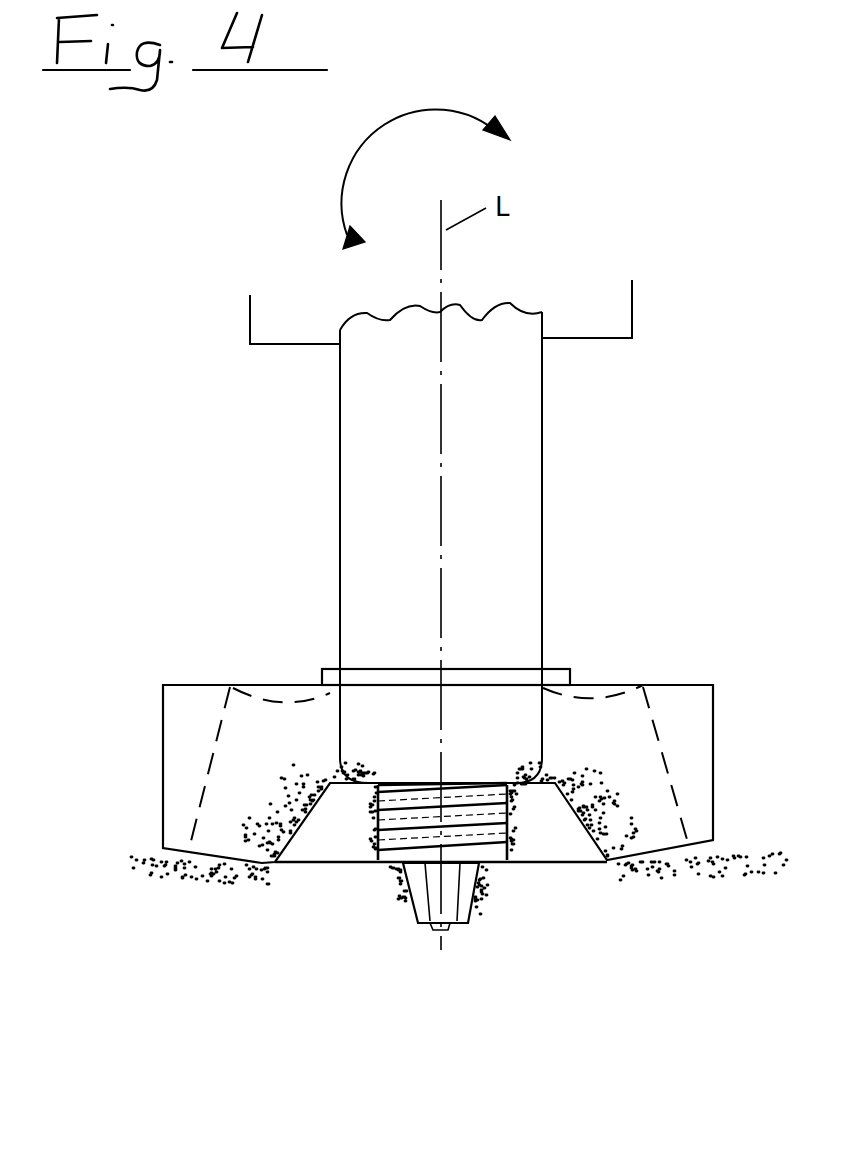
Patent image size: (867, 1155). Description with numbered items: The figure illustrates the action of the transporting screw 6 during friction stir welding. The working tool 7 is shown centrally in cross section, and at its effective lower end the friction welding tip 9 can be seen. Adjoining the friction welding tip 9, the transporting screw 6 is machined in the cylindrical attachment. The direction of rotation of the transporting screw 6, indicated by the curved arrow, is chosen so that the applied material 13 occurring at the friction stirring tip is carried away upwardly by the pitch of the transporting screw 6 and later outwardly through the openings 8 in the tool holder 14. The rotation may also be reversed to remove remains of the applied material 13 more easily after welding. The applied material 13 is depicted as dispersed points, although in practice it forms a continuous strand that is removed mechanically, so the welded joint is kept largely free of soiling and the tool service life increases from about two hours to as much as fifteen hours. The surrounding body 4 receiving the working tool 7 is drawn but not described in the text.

The base body 4 is at (670, 703).
The thread 6 is at (443, 827).
The shaft 7 is at (447, 397).
The cavity 8 is at (620, 858).
The pin 9 is at (450, 907).
The bonding layer 13 is at (602, 805).
The guide bracket 14 is at (290, 327).